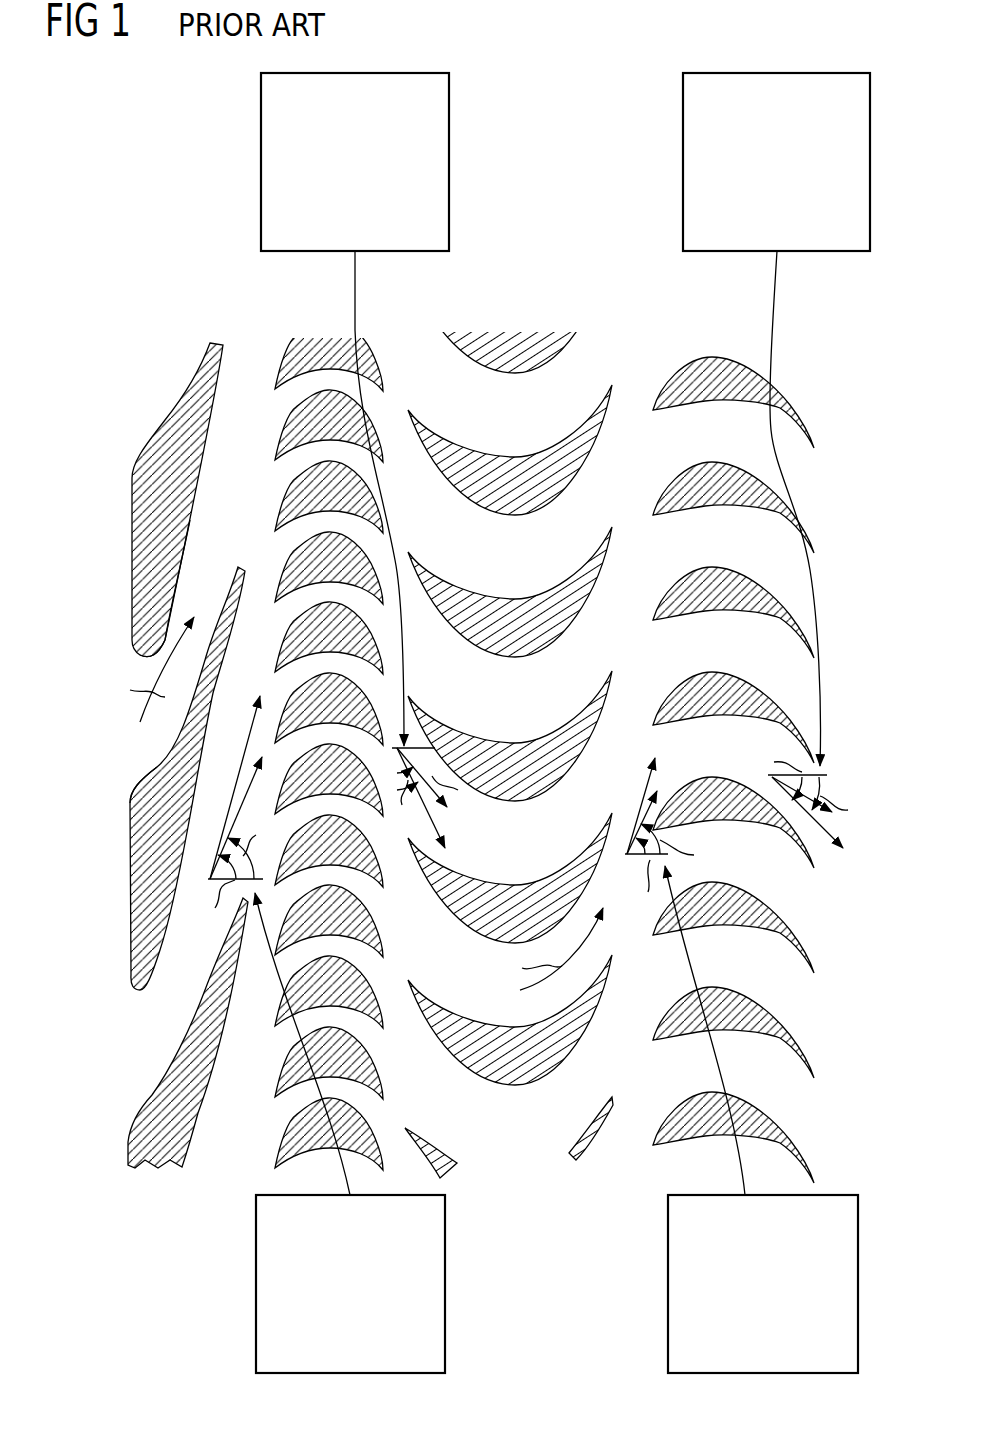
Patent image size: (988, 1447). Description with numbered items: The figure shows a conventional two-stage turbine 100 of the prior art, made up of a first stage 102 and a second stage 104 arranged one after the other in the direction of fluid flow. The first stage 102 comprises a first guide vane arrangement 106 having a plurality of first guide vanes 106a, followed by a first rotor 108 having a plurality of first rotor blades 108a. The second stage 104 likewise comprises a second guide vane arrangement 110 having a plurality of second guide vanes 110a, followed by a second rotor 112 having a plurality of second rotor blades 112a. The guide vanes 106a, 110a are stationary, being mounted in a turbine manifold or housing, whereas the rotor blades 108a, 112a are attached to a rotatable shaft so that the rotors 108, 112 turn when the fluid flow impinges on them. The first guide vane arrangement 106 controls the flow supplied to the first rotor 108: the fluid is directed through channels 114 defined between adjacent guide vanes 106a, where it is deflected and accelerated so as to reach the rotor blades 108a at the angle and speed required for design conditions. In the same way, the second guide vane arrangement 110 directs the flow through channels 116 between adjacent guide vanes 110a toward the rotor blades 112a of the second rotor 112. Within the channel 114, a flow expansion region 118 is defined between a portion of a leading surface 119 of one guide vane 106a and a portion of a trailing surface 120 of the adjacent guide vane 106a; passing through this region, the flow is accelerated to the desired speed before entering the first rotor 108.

The two-stage turbine 100 is at (537, 160).
The first stage 102 is at (380, 326).
The second stage 104 is at (815, 326).
The first guide vane arrangement 106 is at (118, 384).
The first guide vane 106a is at (133, 510).
The first rotor 108 is at (386, 410).
The first rotor blade 108a is at (286, 542).
The second guide vane arrangement 110 is at (600, 374).
The second guide vane 110a is at (511, 474).
The second rotor 112 is at (820, 386).
The second rotor blade 112a is at (692, 583).
The channel 114 is at (224, 474).
The channel 116 is at (557, 826).
The flow expansion region 118 is at (175, 612).
The leading surface 119 is at (168, 749).
The trailing surface 120 is at (176, 540).